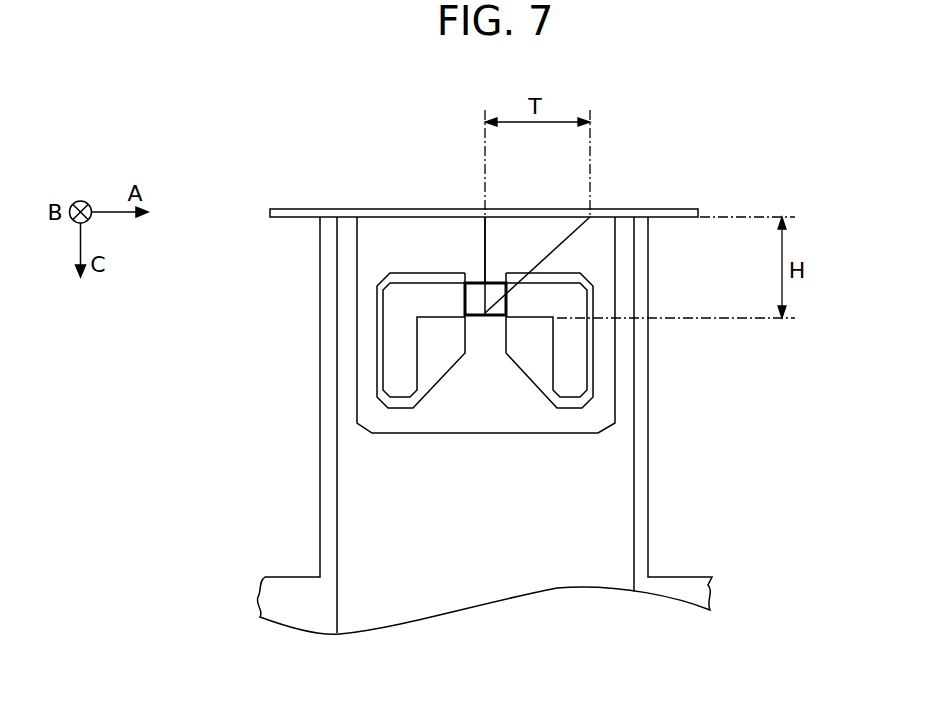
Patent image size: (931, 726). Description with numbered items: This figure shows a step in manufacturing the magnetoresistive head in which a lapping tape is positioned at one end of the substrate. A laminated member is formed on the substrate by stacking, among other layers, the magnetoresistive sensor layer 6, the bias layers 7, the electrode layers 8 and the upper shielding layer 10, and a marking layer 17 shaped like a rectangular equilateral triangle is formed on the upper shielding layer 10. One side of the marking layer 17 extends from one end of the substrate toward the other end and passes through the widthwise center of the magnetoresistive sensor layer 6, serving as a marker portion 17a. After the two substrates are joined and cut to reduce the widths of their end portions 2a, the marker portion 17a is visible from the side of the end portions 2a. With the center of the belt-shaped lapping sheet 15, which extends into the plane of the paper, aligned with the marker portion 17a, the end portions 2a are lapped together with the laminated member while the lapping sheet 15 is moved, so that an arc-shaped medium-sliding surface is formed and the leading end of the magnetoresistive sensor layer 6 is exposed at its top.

The end portion 2a is at (649, 462).
The magnetoresistive sensor layer 6 is at (473, 298).
The bias layers 7 is at (402, 405).
The electrode layers 8 is at (402, 363).
The upper shielding layer 10 is at (413, 423).
The lapping sheet 15 is at (692, 208).
The marking layer 17 is at (493, 241).
The marker portion 17a is at (485, 260).